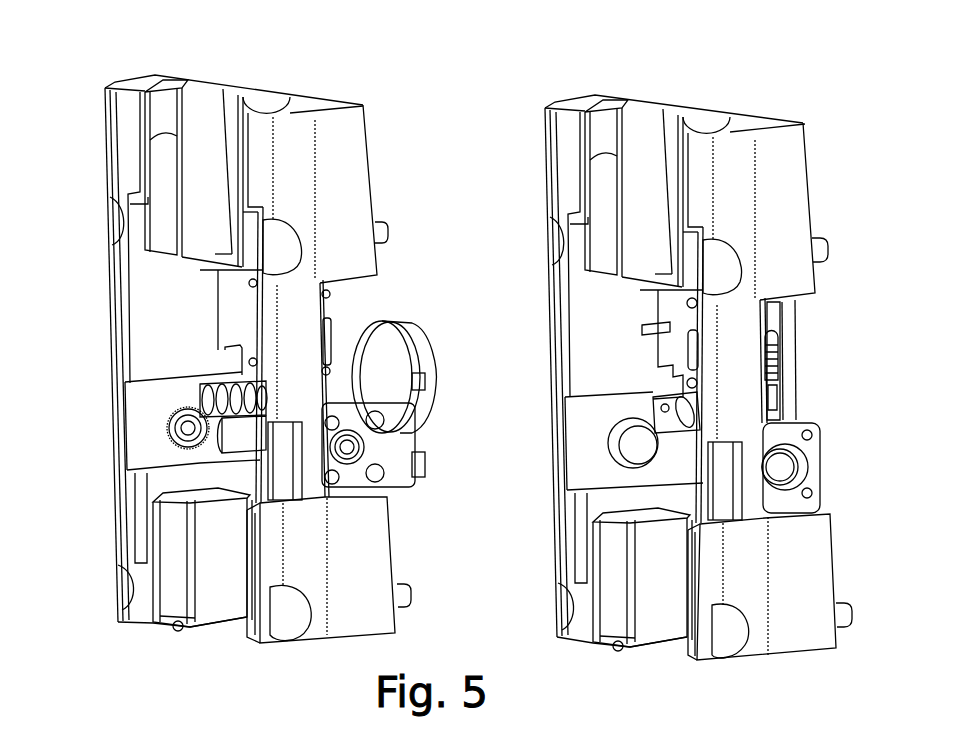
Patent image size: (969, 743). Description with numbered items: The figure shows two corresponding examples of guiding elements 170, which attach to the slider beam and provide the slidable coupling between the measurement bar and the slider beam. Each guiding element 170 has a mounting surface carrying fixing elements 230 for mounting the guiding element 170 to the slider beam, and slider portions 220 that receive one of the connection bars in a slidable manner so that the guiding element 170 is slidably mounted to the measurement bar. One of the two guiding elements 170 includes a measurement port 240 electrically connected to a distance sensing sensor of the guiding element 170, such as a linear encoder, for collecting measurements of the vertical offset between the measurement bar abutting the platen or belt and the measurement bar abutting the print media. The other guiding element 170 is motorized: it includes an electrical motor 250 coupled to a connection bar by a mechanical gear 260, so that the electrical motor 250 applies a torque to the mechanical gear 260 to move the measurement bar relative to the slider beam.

The guiding element 170 is at (337, 100).
The slider portion 220 is at (202, 155).
The fixing element 230 is at (388, 230).
The measurement port 240 is at (780, 358).
The electrical motor 250 is at (417, 348).
The mechanical gear 260 is at (188, 428).